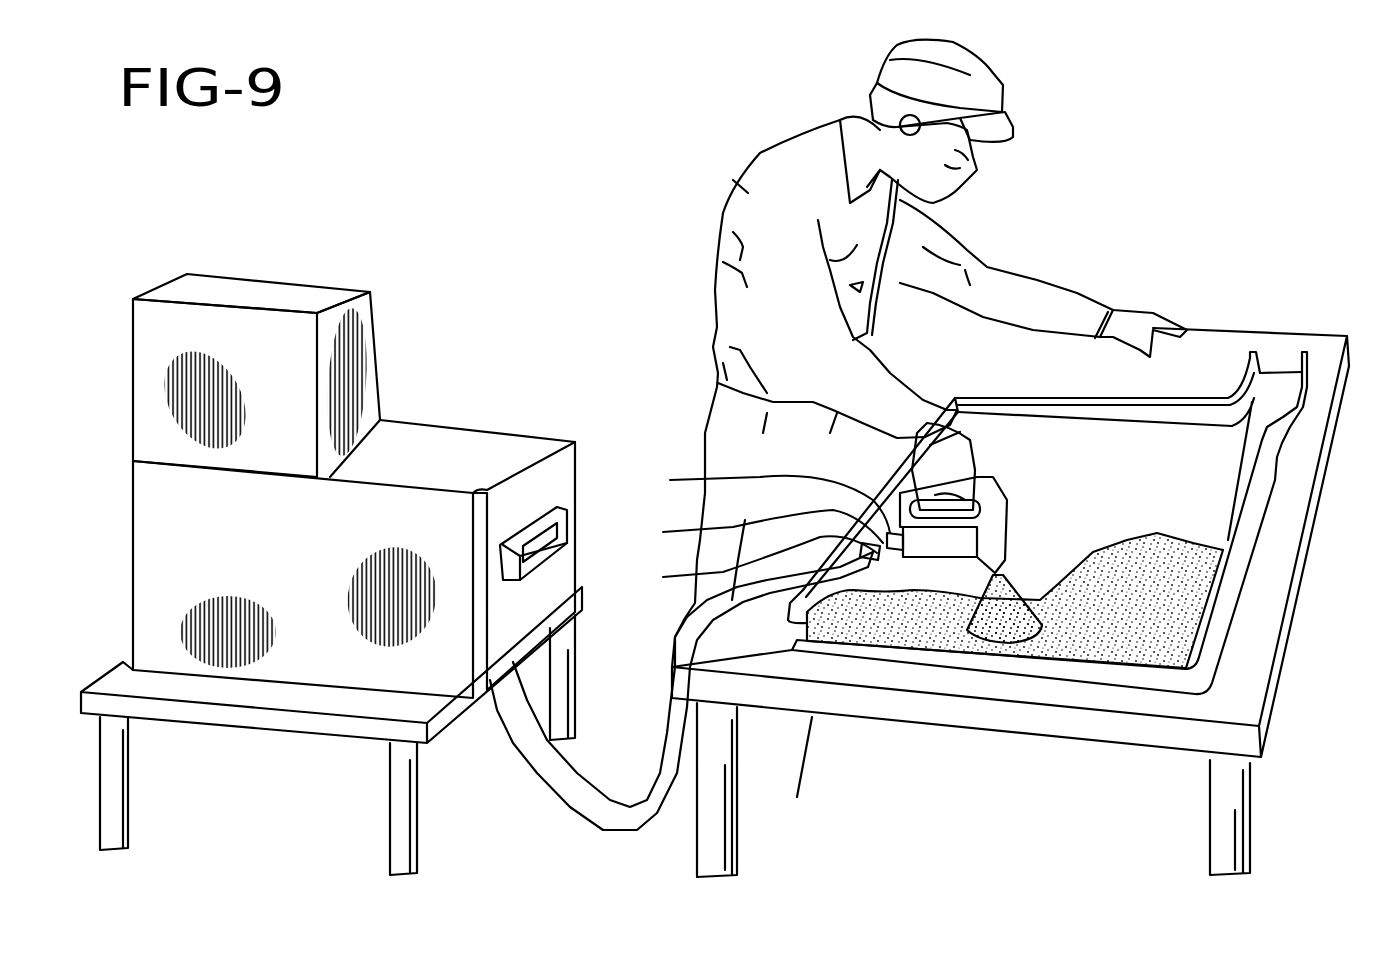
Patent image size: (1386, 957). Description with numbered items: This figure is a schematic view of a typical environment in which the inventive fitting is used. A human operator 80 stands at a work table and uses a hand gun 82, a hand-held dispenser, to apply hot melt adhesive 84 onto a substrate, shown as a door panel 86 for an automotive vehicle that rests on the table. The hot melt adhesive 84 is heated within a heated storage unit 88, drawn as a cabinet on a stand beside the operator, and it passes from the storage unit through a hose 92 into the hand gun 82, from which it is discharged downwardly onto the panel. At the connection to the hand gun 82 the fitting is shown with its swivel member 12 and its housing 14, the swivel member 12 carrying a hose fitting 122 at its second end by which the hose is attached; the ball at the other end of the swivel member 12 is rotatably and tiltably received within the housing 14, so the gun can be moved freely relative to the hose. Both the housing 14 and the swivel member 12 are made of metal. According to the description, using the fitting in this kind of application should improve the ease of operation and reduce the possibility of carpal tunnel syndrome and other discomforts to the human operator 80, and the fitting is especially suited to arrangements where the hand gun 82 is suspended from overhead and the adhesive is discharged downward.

The human operator 80 is at (750, 195).
The hand gun 82 is at (1000, 500).
The hot melt adhesive 84 is at (1017, 627).
The door panel 86 is at (1210, 437).
The heated storage unit 88 is at (462, 462).
The hose 92 is at (533, 767).
The hose fitting 122 is at (754, 500).
The swivel member 12 is at (755, 530).
The housing 14 is at (752, 566).